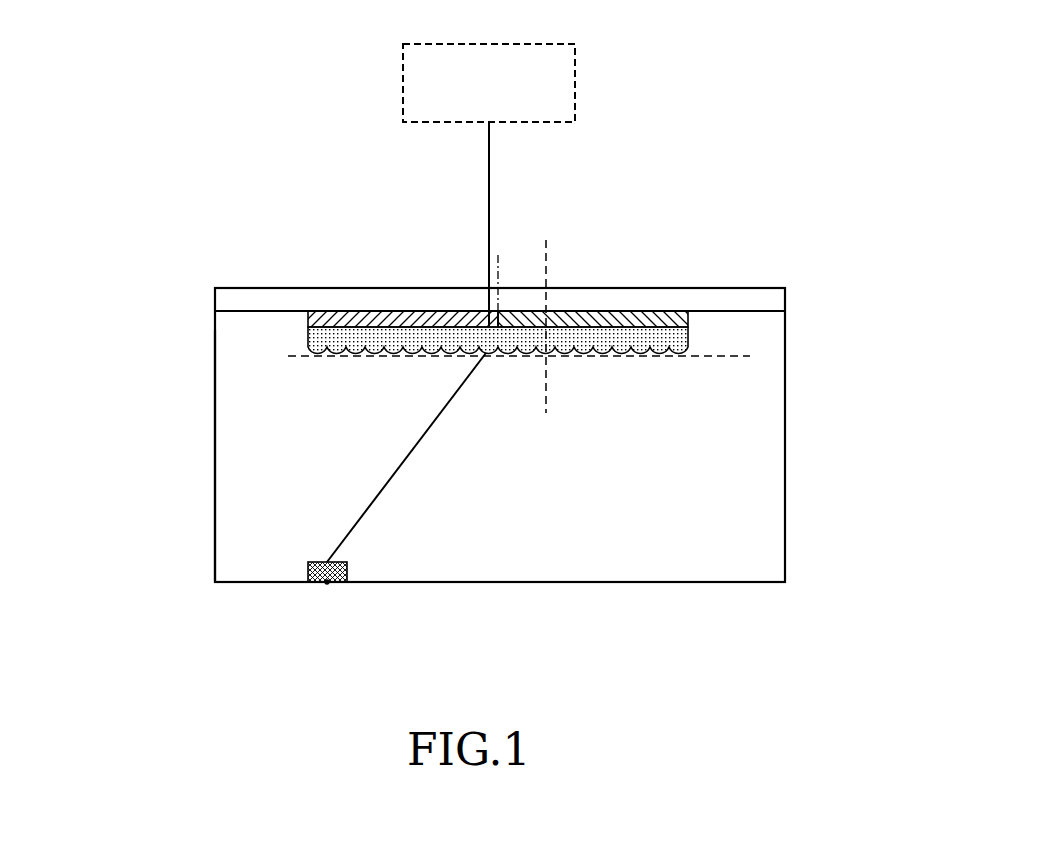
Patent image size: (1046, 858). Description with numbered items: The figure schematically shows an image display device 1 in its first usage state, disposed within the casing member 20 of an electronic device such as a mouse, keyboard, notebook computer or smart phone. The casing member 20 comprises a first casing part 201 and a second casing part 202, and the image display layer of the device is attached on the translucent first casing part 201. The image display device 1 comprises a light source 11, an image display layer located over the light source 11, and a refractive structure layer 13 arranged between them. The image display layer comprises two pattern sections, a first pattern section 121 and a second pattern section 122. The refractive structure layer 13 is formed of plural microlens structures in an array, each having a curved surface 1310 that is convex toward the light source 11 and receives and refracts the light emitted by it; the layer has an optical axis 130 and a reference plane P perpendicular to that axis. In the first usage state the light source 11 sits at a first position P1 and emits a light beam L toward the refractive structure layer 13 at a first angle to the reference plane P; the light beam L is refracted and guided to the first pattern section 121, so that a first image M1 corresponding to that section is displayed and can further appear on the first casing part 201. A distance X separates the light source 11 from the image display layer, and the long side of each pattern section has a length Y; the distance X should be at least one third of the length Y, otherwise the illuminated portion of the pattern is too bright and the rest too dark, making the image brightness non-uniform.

The image display device 1 is at (261, 499).
The light source 11 is at (308, 572).
The first pattern section 121 is at (380, 311).
The second pattern section 122 is at (612, 311).
The refractive structure layer 13 is at (308, 339).
The optical axis 130 is at (546, 256).
The curved surface 1310 is at (660, 357).
The casing member 20 is at (98, 287).
The first casing part 201 is at (216, 301).
The second casing part 202 is at (216, 414).
The first image M1 is at (576, 78).
The light beam L is at (405, 460).
The reference plane P is at (740, 356).
The first position P1 is at (327, 584).
The distance X is at (347, 561).
The length Y is at (489, 265).